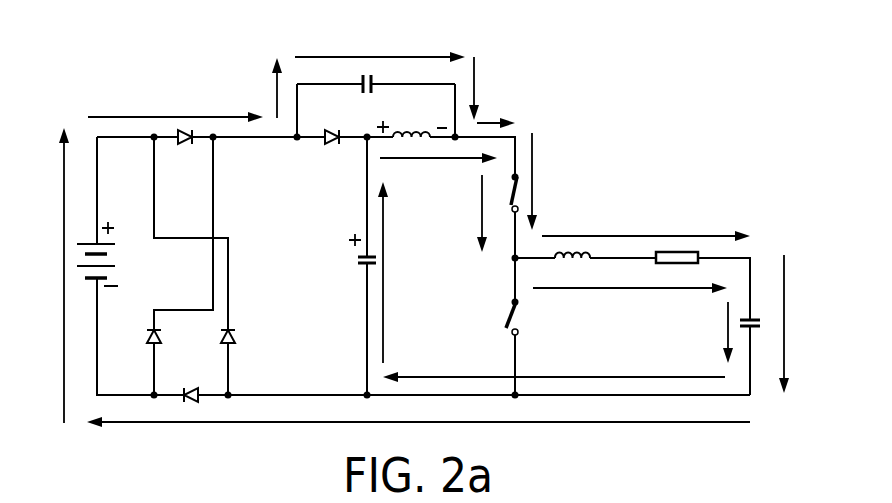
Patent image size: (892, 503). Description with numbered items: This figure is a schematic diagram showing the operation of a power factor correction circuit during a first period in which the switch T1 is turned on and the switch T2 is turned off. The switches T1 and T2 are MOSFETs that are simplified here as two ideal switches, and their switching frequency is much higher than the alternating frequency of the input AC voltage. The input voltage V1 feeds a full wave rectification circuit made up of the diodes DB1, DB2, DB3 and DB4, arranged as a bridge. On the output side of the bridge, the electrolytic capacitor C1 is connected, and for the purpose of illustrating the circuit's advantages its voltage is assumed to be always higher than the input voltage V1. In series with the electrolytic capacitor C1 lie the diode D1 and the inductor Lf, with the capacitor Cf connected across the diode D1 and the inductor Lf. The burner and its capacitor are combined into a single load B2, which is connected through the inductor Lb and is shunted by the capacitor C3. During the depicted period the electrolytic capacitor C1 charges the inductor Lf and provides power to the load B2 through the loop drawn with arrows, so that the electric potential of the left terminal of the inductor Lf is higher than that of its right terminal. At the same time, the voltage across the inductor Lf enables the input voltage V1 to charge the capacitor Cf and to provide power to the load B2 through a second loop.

The input voltage V1 is at (111, 261).
The diode DB1 is at (186, 151).
The diode DB2 is at (192, 383).
The diode DB3 is at (248, 341).
The diode DB4 is at (134, 341).
The diode D1 is at (334, 127).
The capacitor Cf is at (381, 77).
The inductor Lf is at (411, 122).
The electrolytic capacitor C1 is at (354, 265).
The switch T1 is at (502, 194).
The switch T2 is at (525, 318).
The inductor Lb is at (572, 270).
The load B2 is at (677, 273).
The capacitor C3 is at (760, 310).